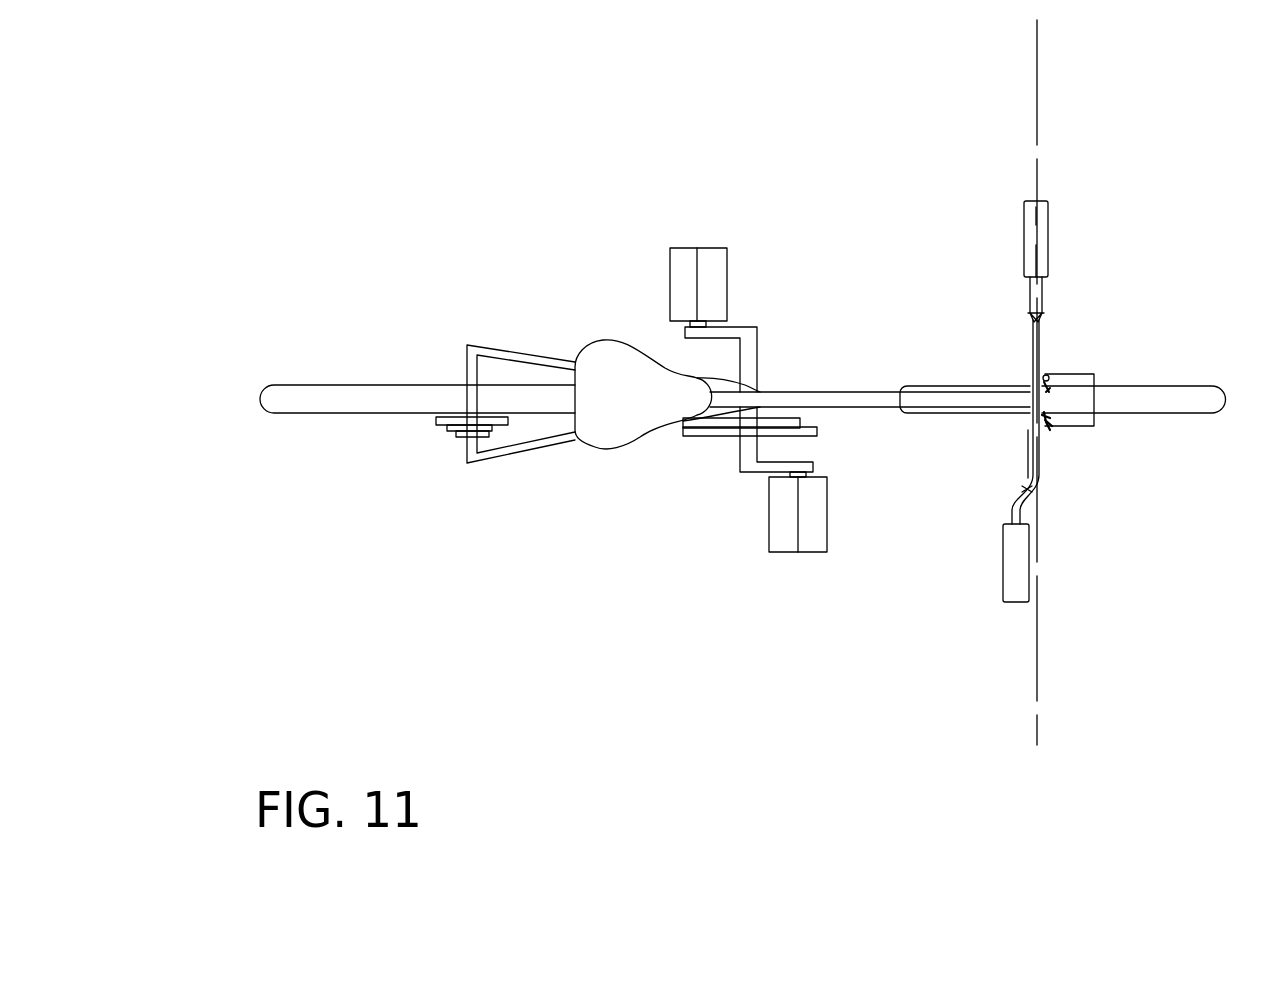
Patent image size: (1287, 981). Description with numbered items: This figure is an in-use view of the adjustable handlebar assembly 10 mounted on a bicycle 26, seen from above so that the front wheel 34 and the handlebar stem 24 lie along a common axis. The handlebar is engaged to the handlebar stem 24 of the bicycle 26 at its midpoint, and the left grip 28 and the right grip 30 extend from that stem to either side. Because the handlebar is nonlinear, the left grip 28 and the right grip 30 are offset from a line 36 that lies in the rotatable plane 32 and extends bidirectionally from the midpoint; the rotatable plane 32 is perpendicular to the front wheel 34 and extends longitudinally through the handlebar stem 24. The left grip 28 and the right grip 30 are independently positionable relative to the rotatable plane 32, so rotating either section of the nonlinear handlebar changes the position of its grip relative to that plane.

The adjustable handlebar assembly 10 is at (1097, 145).
The handlebar stem 24 is at (1048, 426).
The bicycle 26 is at (843, 388).
The left grip 28 is at (1054, 233).
The right grip 30 is at (1001, 565).
The rotatable plane 32 is at (1046, 297).
The front wheel 34 is at (1170, 390).
The line 36 is at (1033, 669).